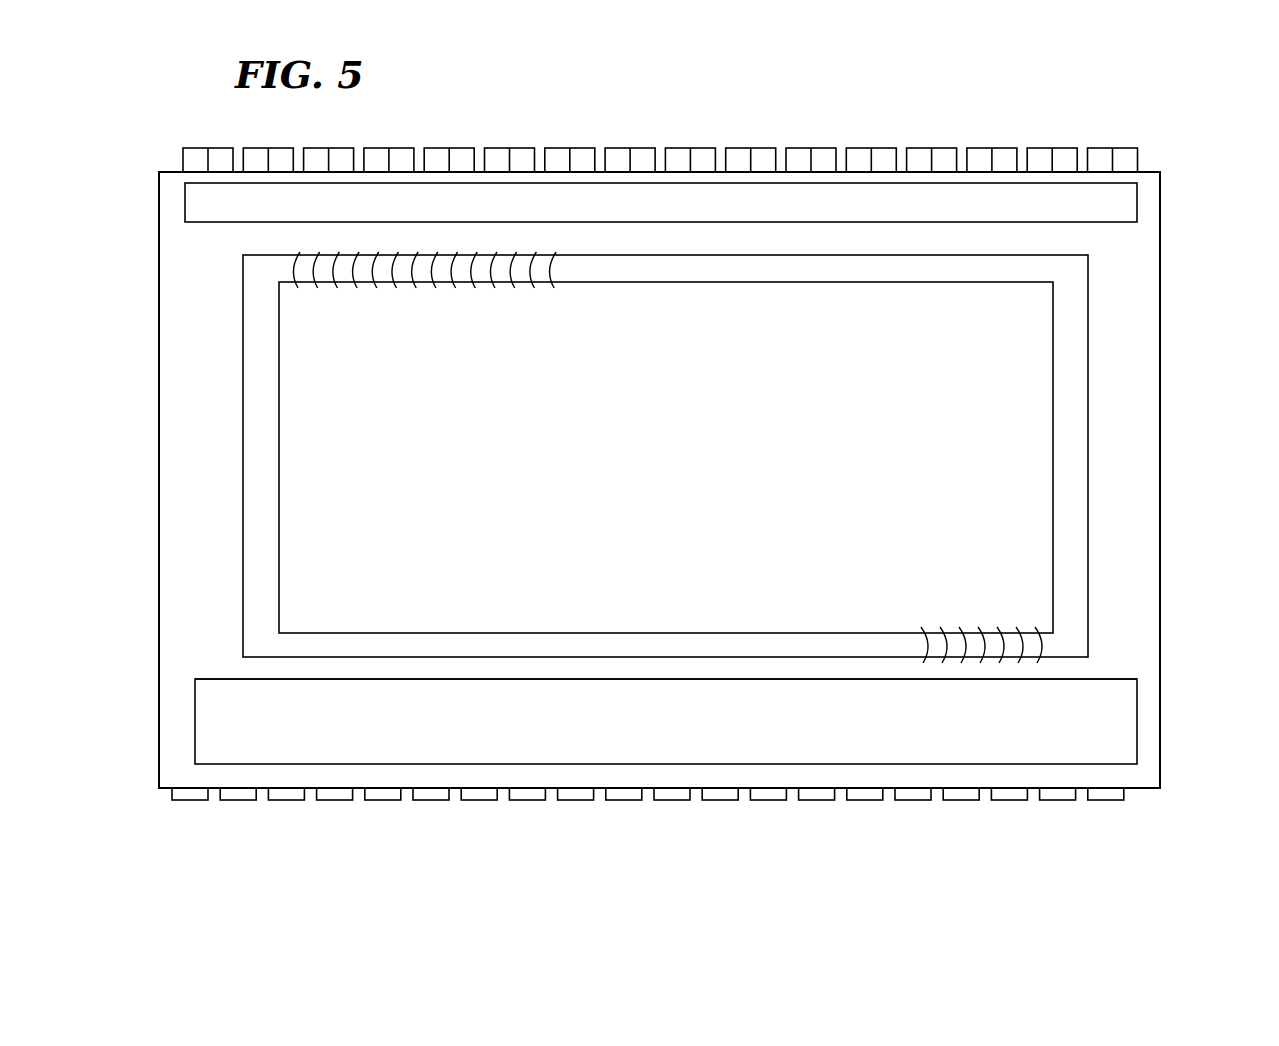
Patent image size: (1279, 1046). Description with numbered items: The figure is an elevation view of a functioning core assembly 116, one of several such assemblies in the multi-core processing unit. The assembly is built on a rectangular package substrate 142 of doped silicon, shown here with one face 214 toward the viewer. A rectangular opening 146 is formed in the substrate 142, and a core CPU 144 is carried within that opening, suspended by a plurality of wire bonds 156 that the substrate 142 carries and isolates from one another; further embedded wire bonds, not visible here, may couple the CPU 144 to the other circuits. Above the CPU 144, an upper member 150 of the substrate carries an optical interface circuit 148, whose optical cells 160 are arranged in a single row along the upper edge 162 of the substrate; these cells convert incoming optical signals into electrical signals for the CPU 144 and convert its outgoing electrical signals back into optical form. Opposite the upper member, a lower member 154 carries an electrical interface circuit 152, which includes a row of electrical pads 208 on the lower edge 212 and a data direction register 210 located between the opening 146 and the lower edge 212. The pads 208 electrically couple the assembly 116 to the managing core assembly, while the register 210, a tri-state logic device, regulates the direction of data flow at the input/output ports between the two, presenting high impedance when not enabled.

The functioning core assembly 116 is at (1186, 497).
The substrate 142 is at (1166, 326).
The core CPU 144 is at (1057, 339).
The opening 146 is at (1080, 298).
The optical interface circuit 148 is at (1147, 190).
The upper member 150 is at (144, 175).
The electrical interface circuit 152 is at (1156, 739).
The lower member 154 is at (148, 753).
The wire bonds 156 is at (559, 262).
The optical cells 160 is at (883, 147).
The upper edge 162 is at (1141, 170).
The pads 208 is at (278, 800).
The data direction register 210 is at (1142, 690).
The lower edge 212 is at (360, 788).
The face 214 is at (188, 308).